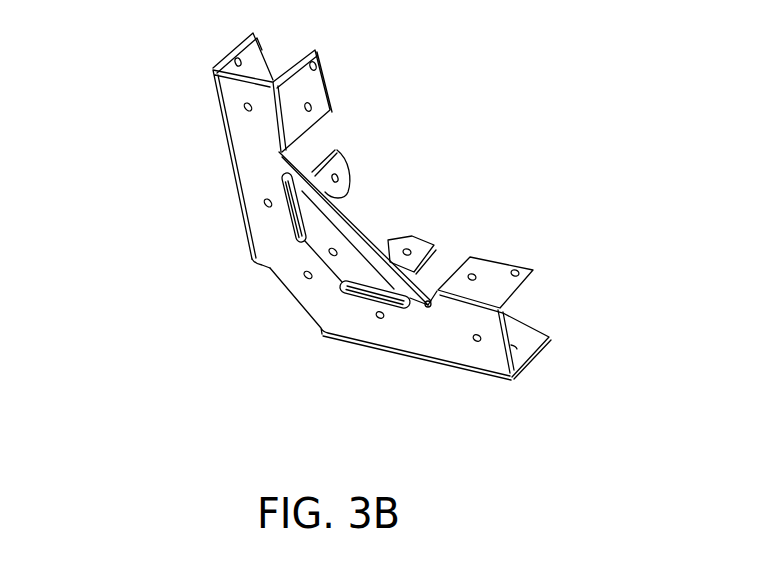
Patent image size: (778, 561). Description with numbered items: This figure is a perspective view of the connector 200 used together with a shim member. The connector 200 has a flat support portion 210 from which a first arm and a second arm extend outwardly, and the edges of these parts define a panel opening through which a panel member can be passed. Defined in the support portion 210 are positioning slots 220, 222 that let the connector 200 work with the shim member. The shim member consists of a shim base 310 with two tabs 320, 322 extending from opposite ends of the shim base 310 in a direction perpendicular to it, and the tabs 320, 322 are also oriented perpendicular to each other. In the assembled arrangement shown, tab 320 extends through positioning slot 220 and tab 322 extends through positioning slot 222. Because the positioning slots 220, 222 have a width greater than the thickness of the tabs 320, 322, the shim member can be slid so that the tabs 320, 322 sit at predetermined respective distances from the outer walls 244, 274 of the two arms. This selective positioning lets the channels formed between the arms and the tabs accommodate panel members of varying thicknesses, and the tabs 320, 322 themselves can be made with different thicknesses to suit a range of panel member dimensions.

The connector 200 is at (355, 233).
The flat support portion 210 is at (320, 280).
The positioning slot 220 is at (283, 240).
The positioning slot 222 is at (352, 298).
The outer wall 244 is at (252, 55).
The outer wall 274 is at (532, 337).
The shim base 310 is at (320, 230).
The tab 320 is at (345, 160).
The tab 322 is at (400, 240).